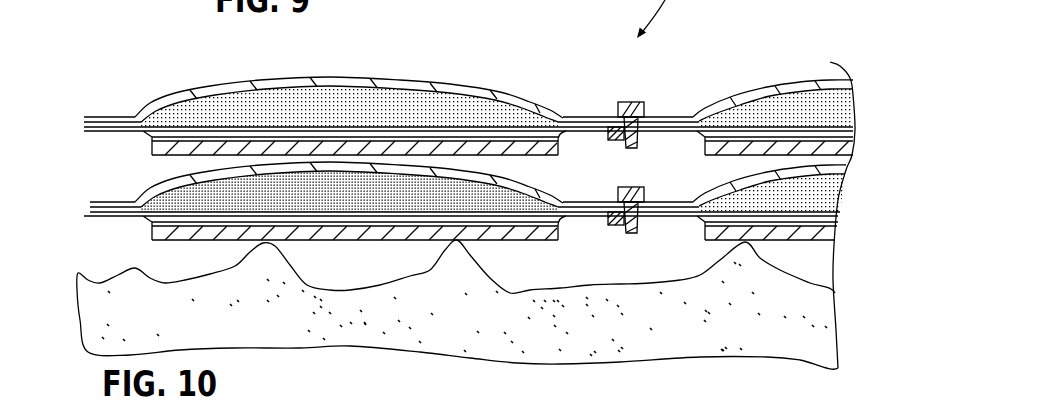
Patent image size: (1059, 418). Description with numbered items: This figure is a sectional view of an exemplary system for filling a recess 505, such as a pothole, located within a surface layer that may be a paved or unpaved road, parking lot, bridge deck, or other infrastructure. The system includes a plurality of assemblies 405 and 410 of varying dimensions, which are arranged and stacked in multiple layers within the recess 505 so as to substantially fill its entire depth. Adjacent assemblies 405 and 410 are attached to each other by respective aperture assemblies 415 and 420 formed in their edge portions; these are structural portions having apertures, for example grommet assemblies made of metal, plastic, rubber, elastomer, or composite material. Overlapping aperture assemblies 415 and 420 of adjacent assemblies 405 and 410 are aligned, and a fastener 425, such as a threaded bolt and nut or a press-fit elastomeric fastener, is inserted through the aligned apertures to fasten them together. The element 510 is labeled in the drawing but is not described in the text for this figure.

The expandable chamber 405 is at (186, 80).
The rigid support structure 410 is at (808, 72).
The flexible membrane layer 415 is at (110, 117).
The fastener 420 is at (640, 133).
The fastener head 425 is at (629, 102).
The substrate surface 505 is at (320, 358).
The substrate feature 510 is at (715, 417).